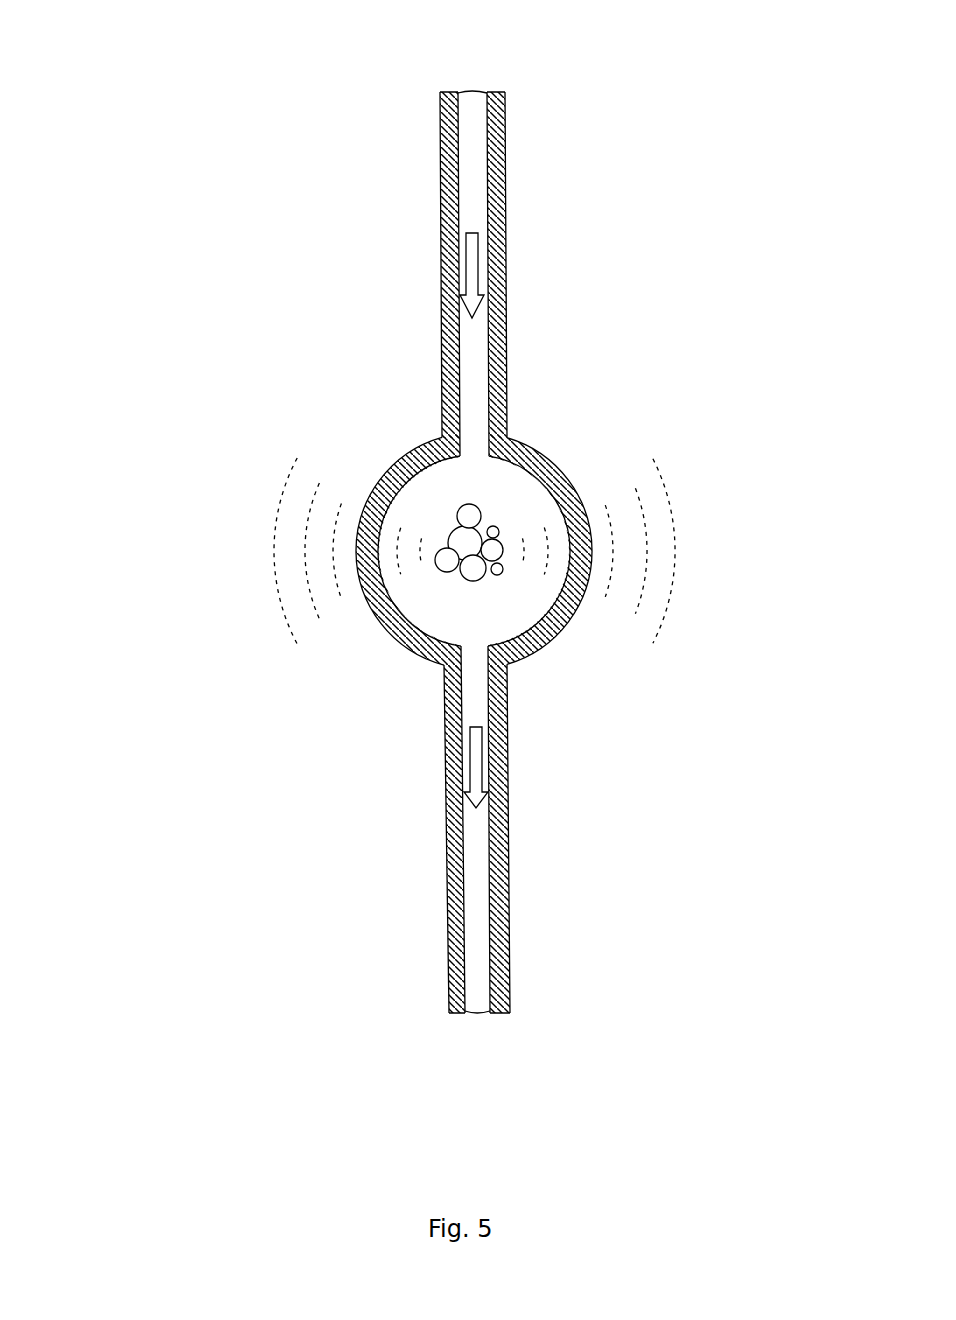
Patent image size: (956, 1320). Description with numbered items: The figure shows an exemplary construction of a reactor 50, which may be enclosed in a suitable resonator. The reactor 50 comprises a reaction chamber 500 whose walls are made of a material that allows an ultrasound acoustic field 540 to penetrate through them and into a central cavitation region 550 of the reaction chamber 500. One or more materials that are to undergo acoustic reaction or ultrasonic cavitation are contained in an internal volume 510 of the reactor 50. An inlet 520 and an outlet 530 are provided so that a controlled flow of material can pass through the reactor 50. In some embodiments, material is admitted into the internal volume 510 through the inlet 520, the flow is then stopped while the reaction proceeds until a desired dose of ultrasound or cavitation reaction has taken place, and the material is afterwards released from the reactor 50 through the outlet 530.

The reactor 50 is at (440, 507).
The reaction chamber 500 is at (405, 657).
The internal volume 510 is at (513, 505).
The inlet 520 is at (500, 141).
The outlet 530 is at (507, 943).
The ultrasound acoustic field 540 is at (663, 505).
The central cavitation region 550 is at (447, 546).